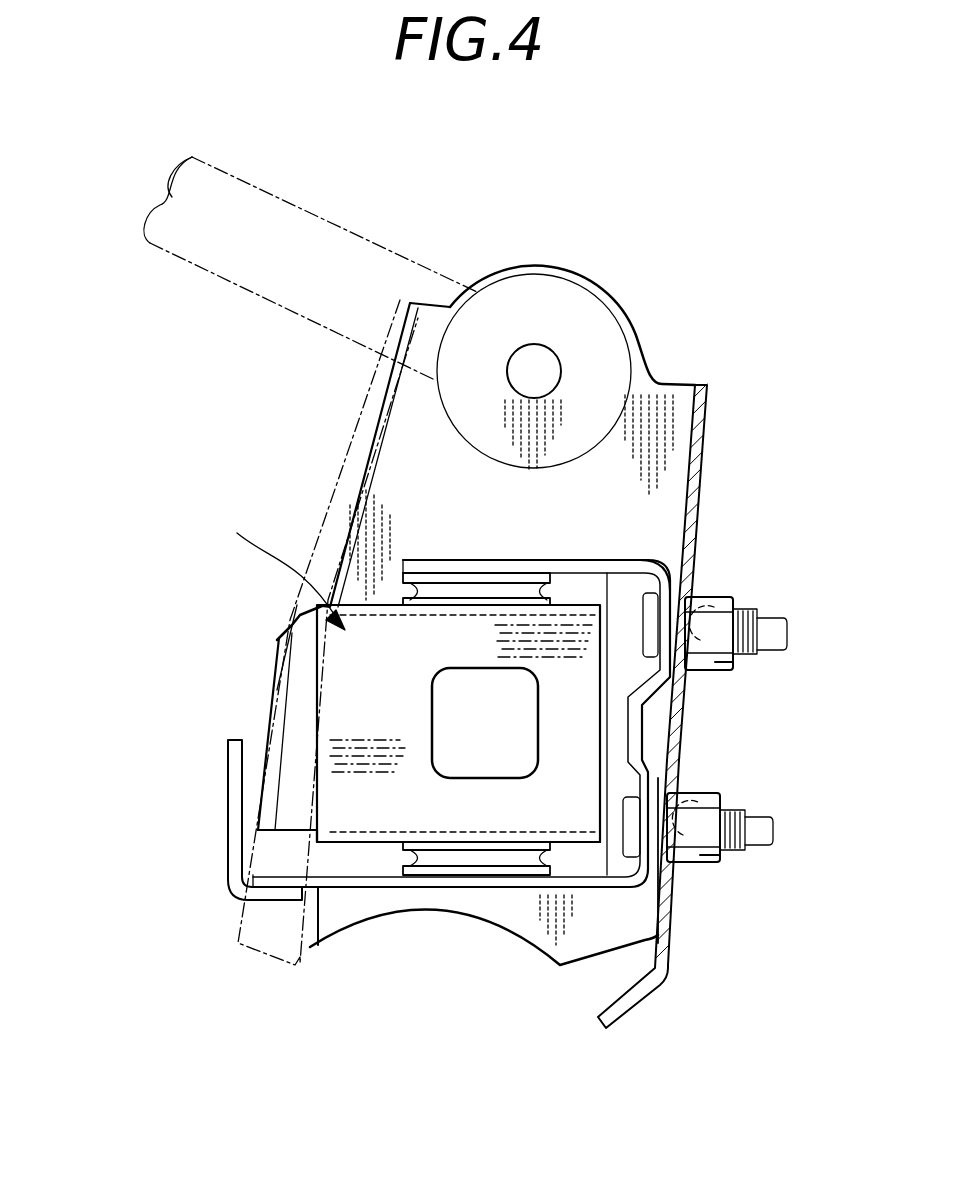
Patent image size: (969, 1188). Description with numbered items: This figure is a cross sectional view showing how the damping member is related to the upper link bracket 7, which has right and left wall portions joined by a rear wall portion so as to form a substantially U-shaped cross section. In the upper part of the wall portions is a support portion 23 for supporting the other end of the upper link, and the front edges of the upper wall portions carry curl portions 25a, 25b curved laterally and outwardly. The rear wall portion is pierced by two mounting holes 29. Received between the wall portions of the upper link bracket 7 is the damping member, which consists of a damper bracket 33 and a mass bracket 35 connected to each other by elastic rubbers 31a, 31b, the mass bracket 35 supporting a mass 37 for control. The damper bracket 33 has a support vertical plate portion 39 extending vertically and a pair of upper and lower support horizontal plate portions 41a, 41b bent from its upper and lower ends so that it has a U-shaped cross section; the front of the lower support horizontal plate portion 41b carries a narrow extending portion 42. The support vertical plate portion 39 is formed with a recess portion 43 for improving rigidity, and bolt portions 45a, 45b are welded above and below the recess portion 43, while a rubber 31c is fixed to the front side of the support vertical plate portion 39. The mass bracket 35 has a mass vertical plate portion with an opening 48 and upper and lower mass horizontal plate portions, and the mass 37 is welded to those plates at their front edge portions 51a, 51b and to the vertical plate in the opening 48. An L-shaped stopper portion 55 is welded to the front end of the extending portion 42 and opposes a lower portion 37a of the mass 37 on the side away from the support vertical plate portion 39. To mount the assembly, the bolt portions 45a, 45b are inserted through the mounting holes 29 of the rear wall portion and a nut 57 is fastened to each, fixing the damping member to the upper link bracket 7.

The upper link bracket 7 is at (670, 381).
The support portion 23 is at (500, 268).
The curl portion 25a is at (300, 593).
The curl portion 25b is at (347, 530).
The mounting hole 29 is at (715, 610).
The rubber 31a is at (458, 590).
The rubber 31b is at (462, 858).
The rubber 31c is at (627, 683).
The damper bracket 33 is at (606, 560).
The mass bracket 35 is at (270, 565).
The mass 37 is at (300, 688).
The lower portion of the mass 37a is at (277, 737).
The support vertical plate portion 39 is at (660, 572).
The upper support horizontal plate portion 41a is at (522, 565).
The lower support horizontal plate portion 41b is at (516, 880).
The extending portion 42 is at (343, 890).
The recess portion 43 is at (633, 732).
The bolt portion 45a is at (752, 622).
The bolt portion 45b is at (733, 853).
The opening 48 is at (437, 705).
The front edge portion 51a is at (298, 613).
The front edge portion 51b is at (318, 843).
The stopper portion 55 is at (236, 776).
The nut 57 is at (715, 660).